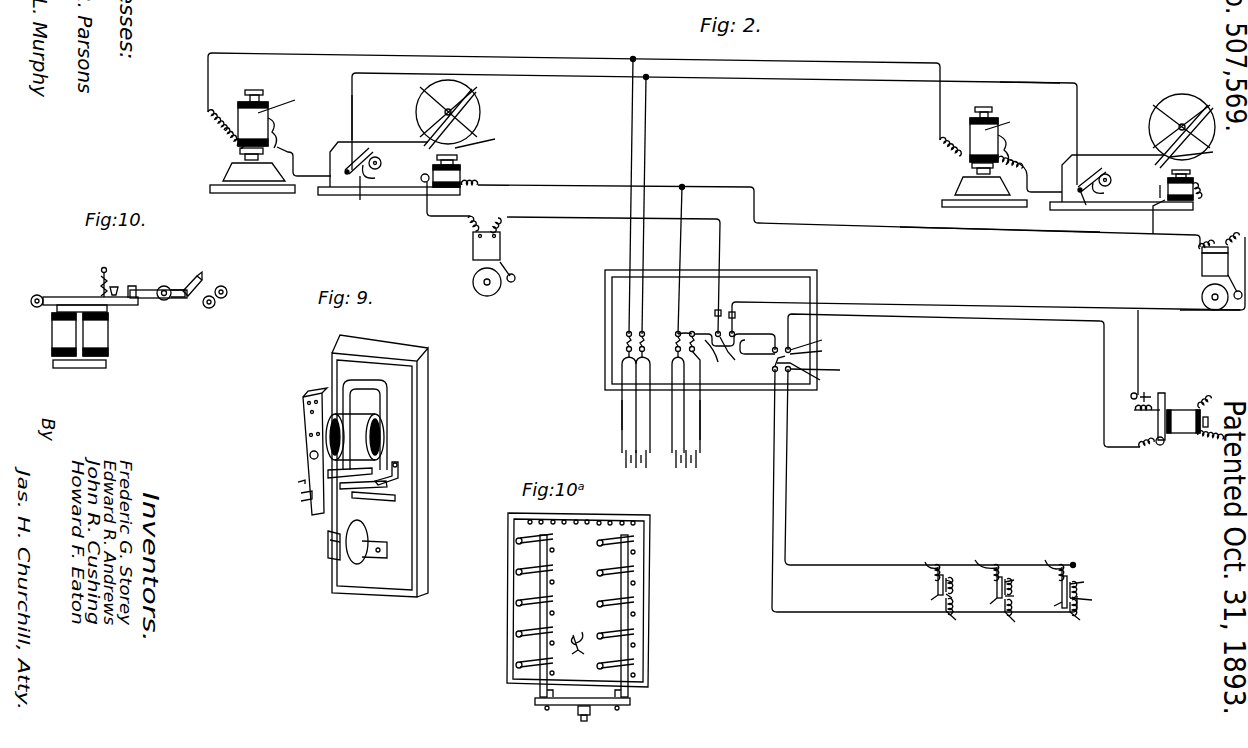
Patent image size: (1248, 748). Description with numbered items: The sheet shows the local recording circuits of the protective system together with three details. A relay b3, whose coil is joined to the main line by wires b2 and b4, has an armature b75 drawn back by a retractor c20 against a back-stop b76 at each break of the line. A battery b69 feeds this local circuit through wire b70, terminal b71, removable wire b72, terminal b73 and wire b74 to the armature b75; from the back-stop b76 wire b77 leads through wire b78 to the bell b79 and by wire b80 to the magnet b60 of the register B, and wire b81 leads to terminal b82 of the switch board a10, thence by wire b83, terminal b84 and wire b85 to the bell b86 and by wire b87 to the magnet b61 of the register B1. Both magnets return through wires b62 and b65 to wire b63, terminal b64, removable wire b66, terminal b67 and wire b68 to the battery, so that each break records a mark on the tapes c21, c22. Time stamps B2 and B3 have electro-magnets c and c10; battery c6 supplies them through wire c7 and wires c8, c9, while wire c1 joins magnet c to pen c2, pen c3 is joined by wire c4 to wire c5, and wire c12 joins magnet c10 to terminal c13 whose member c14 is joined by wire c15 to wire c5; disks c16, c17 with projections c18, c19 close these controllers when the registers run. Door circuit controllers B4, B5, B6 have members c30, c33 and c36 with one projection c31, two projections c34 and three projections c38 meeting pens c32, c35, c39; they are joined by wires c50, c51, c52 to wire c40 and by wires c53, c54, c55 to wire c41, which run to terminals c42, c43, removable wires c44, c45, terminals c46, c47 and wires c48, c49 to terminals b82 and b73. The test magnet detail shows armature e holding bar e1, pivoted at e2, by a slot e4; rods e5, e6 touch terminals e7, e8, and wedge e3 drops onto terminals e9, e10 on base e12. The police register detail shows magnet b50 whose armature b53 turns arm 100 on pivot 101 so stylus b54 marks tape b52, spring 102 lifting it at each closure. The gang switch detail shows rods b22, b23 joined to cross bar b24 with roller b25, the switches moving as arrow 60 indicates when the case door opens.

In FIG. 2, the wire c9 is at (582, 58).
In FIG. 2, the wire c8 is at (664, 74).
In FIG. 2, the wire c4 is at (1040, 82).
In FIG. 2, the wire c5 is at (647, 136).
In FIG. 2, the wire c15 is at (376, 74).
In FIG. 2, the electro-magnet c10 is at (285, 101).
In FIG. 2, the wire c12 is at (298, 156).
In FIG. 2, the time stamp mechanism B3 is at (253, 141).
In FIG. 2, the register B1 is at (399, 137).
In FIG. 2, the time stamp mechanism B2 is at (992, 157).
In FIG. 2, the register B is at (1132, 152).
In FIG. 2, the electro-magnet c is at (1002, 122).
In FIG. 2, the wire c1 is at (1029, 180).
In FIG. 2, the terminal or pen c3 is at (1090, 168).
In FIG. 2, the co-operating member c14 is at (357, 148).
In FIG. 2, the disk c17 is at (382, 162).
In FIG. 2, the projection c19 is at (378, 178).
In FIG. 2, the terminal c13 is at (366, 195).
In FIG. 2, the disk c16 is at (1112, 180).
In FIG. 2, the projection c18 is at (1109, 191).
In FIG. 2, the terminal or pen c2 is at (1092, 207).
In FIG. 2, the tape c21 is at (1202, 155).
In FIG. 2, the tape c22 is at (486, 140).
In FIG. 2, the magnet b60 is at (1196, 187).
In FIG. 2, the magnet b61 is at (462, 170).
In FIG. 2, the wire b65 is at (556, 184).
In FIG. 2, the wire b62 is at (1020, 232).
In FIG. 2, the wire b87 is at (434, 218).
In FIG. 2, the bell b86 is at (501, 248).
In FIG. 2, the wire b85 is at (721, 243).
In FIG. 2, the wire b63 is at (682, 243).
In FIG. 2, the wire b80 is at (1150, 219).
In FIG. 2, the bell b79 is at (1200, 266).
In FIG. 2, the wire b81 is at (1004, 308).
In FIG. 2, the wire b78 is at (1192, 312).
In FIG. 2, the wire b74 is at (866, 314).
In FIG. 2, the wire b77 is at (1139, 342).
In FIG. 2, the back-stop b76 is at (1147, 393).
In FIG. 2, the armature b75 is at (1167, 396).
In FIG. 2, the relay b3 is at (1183, 434).
In FIG. 2, the wire b2 is at (1214, 396).
In FIG. 2, the wire b4 is at (1220, 442).
In FIG. 2, the retractor c20 is at (1145, 412).
In FIG. 2, the switch board a10 is at (612, 328).
In FIG. 2, the terminal b64 is at (675, 333).
In FIG. 2, the removable wire b66 is at (676, 346).
In FIG. 2, the terminal b67 is at (686, 357).
In FIG. 2, the wire b68 is at (683, 402).
In FIG. 2, the battery b69 is at (683, 452).
In FIG. 2, the wire b70 is at (702, 430).
In FIG. 2, the terminal b71 is at (702, 355).
In FIG. 2, the removable wire b72 is at (686, 320).
In FIG. 2, the terminal b73 is at (696, 325).
In FIG. 2, the terminal b82 is at (739, 350).
In FIG. 2, the wire b83 is at (724, 368).
In FIG. 2, the terminal b84 is at (733, 322).
In FIG. 2, the wire c48 is at (757, 334).
In FIG. 2, the terminal c47 is at (798, 337).
In FIG. 2, the wire c49 is at (765, 343).
In FIG. 2, the terminal c46 is at (816, 335).
In FIG. 2, the removable wire c44 is at (816, 347).
In FIG. 2, the removable wire c45 is at (826, 367).
In FIG. 2, the terminal c42 is at (808, 377).
In FIG. 2, the terminal c43 is at (773, 371).
In FIG. 2, the battery c6 is at (641, 455).
In FIG. 2, the wire c7 is at (620, 413).
In FIG. 2, the wire c40 is at (787, 493).
In FIG. 2, the wire c41 is at (771, 560).
In FIG. 2, the circuit controller B4 is at (937, 583).
In FIG. 2, the circuit controller B5 is at (996, 585).
In FIG. 2, the circuit controller B6 is at (1061, 586).
In FIG. 2, the wire c50 is at (933, 551).
In FIG. 2, the wire c51 is at (986, 551).
In FIG. 2, the wire c52 is at (1054, 550).
In FIG. 2, the member c30 is at (924, 601).
In FIG. 2, the projection c31 is at (960, 581).
In FIG. 2, the pen or member c32 is at (960, 598).
In FIG. 2, the member c33 is at (987, 606).
In FIG. 2, the projections c34 is at (1019, 578).
In FIG. 2, the pen c35 is at (1019, 595).
In FIG. 2, the contact c36 is at (1047, 607).
In FIG. 2, the projections c38 is at (1086, 581).
In FIG. 2, the contact pen or member c39 is at (1091, 601).
In FIG. 2, the wire c53 is at (957, 625).
In FIG. 2, the wire c54 is at (1017, 628).
In FIG. 2, the wire c55 is at (1085, 624).
In FIG. 10, the armature b53 is at (70, 296).
In FIG. 10, the electro-magnet b50 is at (110, 333).
In FIG. 10, the spring or arm 102 is at (132, 288).
In FIG. 10, the pivot 101 is at (164, 288).
In FIG. 10, the arm 100 is at (183, 299).
In FIG. 10, the stylus or pen b54 is at (197, 273).
In FIG. 10, the tape b52 is at (222, 287).
In FIG. 9, the base e12 is at (428, 380).
In FIG. 9, the armature e is at (296, 456).
In FIG. 9, the wedge-shaped piece e3 is at (330, 517).
In FIG. 9, the bar e1 is at (320, 510).
In FIG. 9, the conducting rod e6 is at (297, 482).
In FIG. 9, the slot e4 is at (301, 500).
In FIG. 9, the circuit terminal e8 is at (345, 487).
In FIG. 9, the pivot e2 is at (400, 467).
In FIG. 9, the circuit terminal e7 is at (400, 478).
In FIG. 9, the conducting rod e5 is at (382, 501).
In FIG. 9, the terminal e9 is at (356, 564).
In FIG. 9, the terminal e10 is at (337, 550).
In FIG. 10a, the rod b22 is at (537, 672).
In FIG. 10a, the arrow 60 is at (581, 598).
In FIG. 10a, the rod b23 is at (628, 668).
In FIG. 10a, the cross bar b24 is at (582, 709).
In FIG. 10a, the roller or projection b25 is at (603, 722).